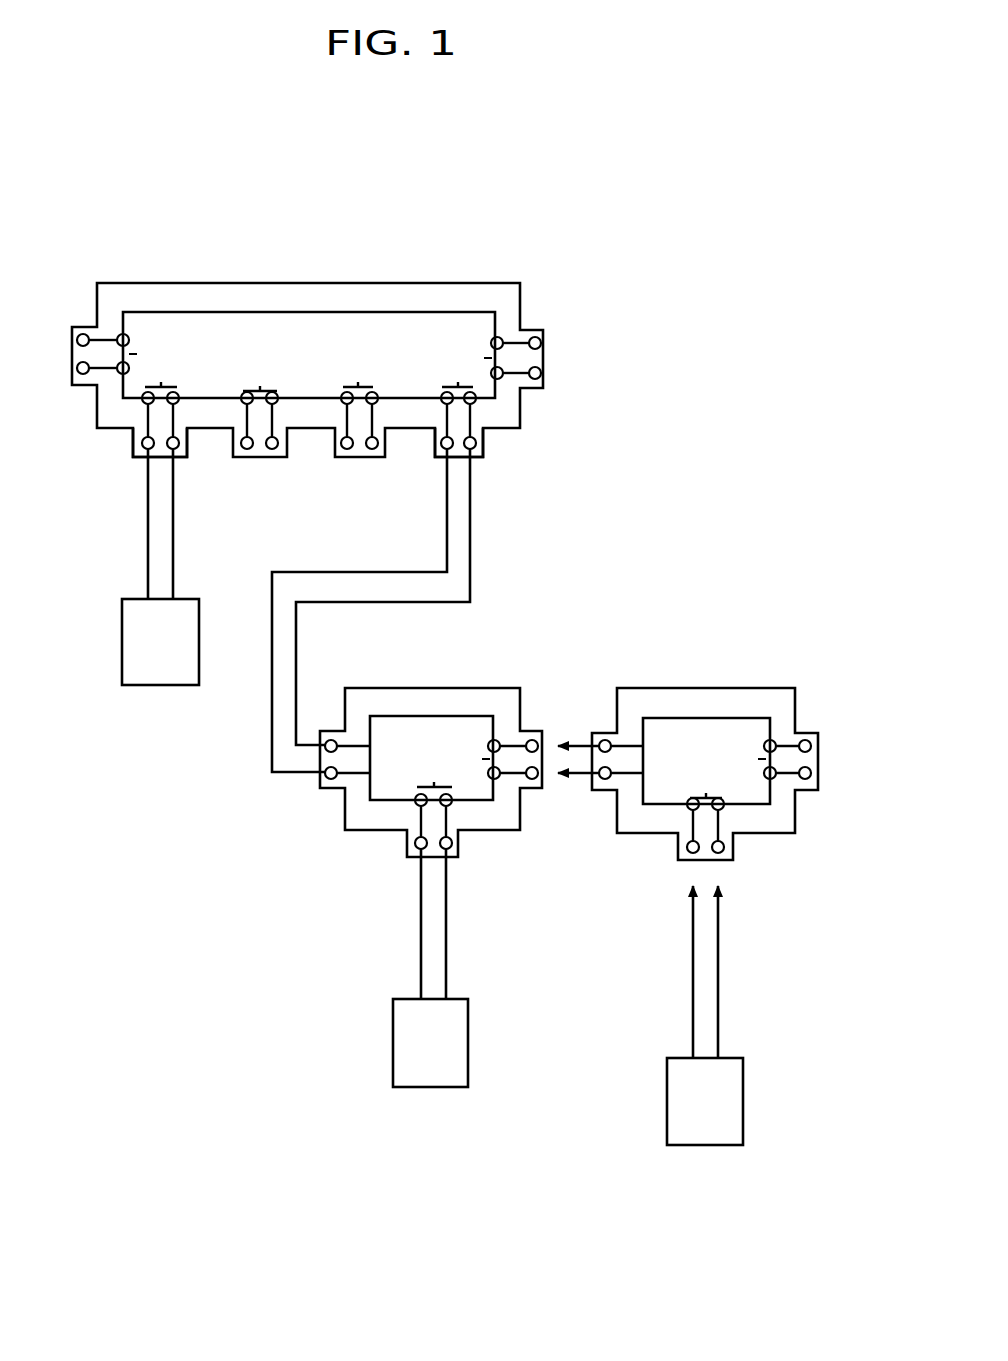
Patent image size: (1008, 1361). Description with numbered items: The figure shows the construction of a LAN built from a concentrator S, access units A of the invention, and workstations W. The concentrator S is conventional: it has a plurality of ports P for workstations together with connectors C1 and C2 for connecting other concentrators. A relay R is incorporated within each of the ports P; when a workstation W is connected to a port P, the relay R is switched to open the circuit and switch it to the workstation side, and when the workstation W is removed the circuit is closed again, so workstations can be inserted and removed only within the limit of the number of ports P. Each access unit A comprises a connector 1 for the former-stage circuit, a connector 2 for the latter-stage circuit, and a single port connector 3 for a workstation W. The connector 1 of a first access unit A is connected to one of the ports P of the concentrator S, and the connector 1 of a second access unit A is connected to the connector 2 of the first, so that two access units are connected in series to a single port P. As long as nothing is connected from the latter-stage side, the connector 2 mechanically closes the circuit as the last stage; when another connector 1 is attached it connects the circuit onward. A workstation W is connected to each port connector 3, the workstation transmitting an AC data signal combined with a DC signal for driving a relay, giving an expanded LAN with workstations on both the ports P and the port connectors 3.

The concentrator S is at (474, 281).
The connector C1 is at (77, 350).
The connector C2 is at (533, 360).
The relay R is at (248, 392).
The port P is at (133, 450).
The workstation W is at (152, 670).
The access unit A is at (471, 681).
The connector for the former-stage circuit 1 is at (322, 758).
The connector for the latter-stage circuit 2 is at (530, 762).
The port connector 3 is at (433, 857).